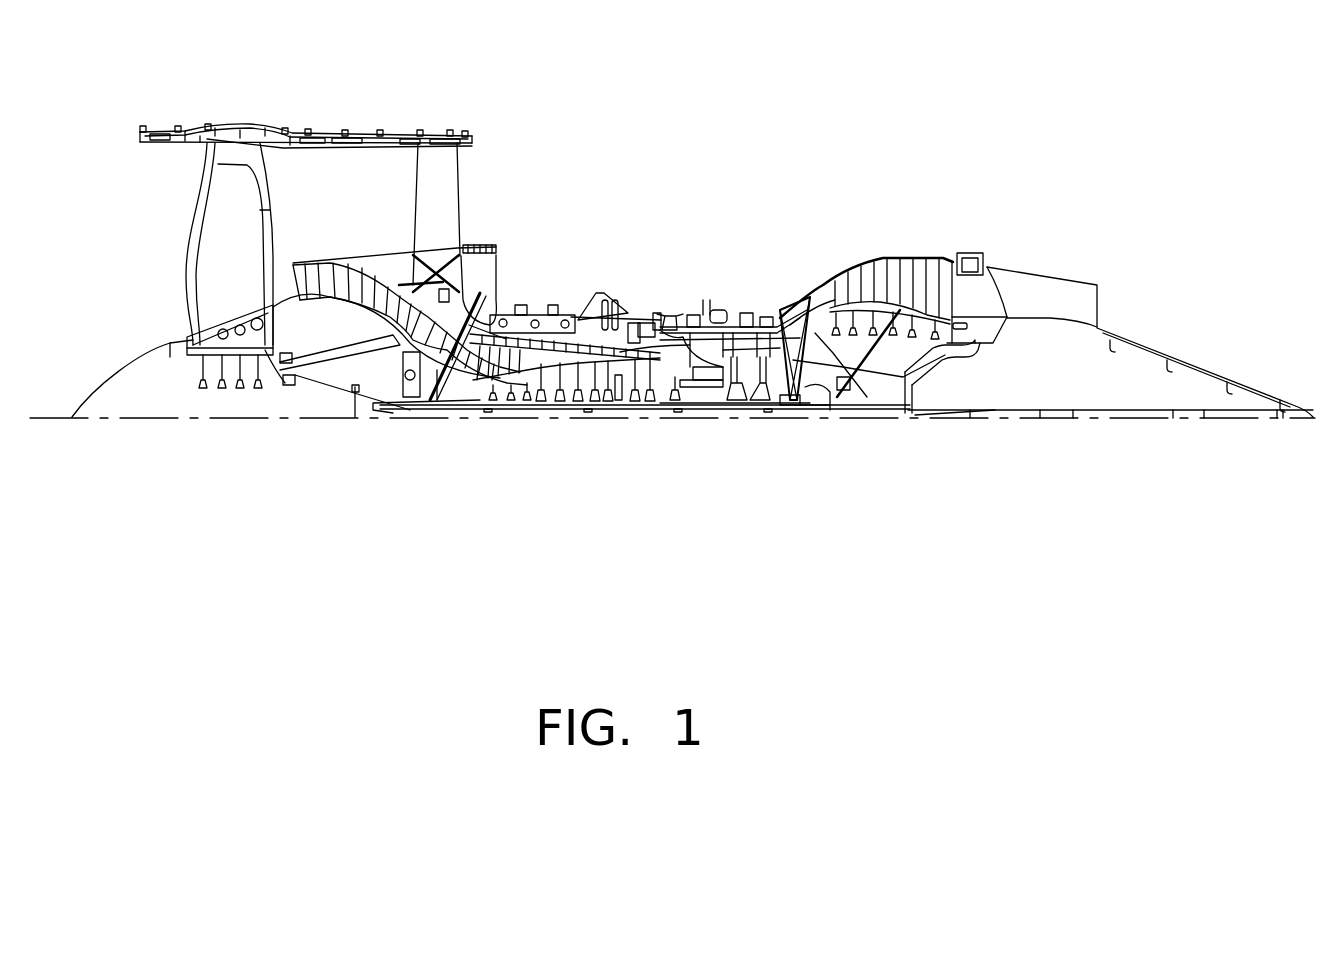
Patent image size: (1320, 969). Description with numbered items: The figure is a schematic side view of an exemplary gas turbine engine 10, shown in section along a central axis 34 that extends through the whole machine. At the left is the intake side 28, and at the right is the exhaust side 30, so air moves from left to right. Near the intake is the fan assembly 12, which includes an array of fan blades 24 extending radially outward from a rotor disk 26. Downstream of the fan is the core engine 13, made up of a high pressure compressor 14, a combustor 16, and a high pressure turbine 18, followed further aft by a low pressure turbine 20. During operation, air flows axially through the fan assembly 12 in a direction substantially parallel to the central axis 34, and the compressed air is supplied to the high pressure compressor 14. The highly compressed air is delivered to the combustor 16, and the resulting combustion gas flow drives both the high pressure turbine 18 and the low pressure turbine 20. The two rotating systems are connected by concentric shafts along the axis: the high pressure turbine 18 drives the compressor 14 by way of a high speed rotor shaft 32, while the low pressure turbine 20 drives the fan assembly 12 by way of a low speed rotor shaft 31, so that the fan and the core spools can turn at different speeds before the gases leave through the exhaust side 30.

The gas turbine engine 10 is at (133, 101).
The fan assembly 12 is at (236, 109).
The core engine 13 is at (539, 430).
The high pressure compressor 14 is at (575, 311).
The combustor 16 is at (688, 387).
The high pressure turbine 18 is at (741, 302).
The low pressure turbine 20 is at (851, 259).
The fan blades 24 is at (233, 244).
The rotor disk 26 is at (200, 362).
The intake side 28 is at (154, 231).
The exhaust side 30 is at (1137, 288).
The low speed rotor shaft 31 is at (839, 402).
The high speed rotor shaft 32 is at (789, 400).
The central axis 34 is at (1204, 421).